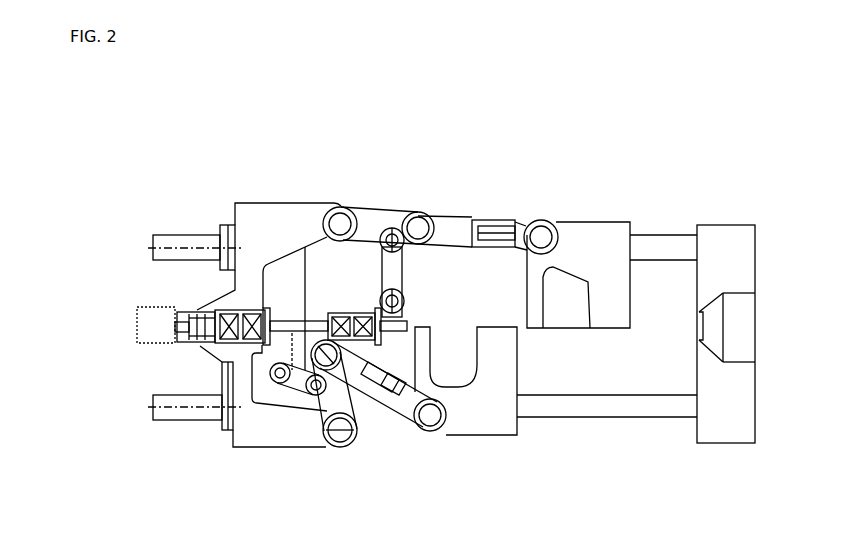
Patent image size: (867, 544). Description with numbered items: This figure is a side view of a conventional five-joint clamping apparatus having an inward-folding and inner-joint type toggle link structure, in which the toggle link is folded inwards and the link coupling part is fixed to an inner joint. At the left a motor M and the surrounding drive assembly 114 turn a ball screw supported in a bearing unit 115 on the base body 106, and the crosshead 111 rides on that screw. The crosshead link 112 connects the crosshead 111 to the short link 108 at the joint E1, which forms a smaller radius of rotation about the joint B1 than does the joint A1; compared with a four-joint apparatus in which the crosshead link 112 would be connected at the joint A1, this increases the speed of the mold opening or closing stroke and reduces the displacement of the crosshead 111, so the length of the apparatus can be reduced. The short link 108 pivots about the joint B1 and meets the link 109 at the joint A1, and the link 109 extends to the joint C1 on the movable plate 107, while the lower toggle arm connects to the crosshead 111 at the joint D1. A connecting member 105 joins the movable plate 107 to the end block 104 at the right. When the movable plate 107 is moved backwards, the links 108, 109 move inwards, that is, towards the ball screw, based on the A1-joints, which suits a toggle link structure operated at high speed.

The drive block 104 is at (738, 256).
The connecting rod 105 is at (663, 243).
The base body 106 is at (270, 218).
The movable plate 107 is at (603, 233).
The short link 108 is at (372, 226).
The link 109 is at (460, 217).
The crosshead 111 is at (425, 334).
The crosshead link 112 is at (396, 268).
The motor 114 is at (155, 340).
The bearing unit 115 is at (235, 350).
The motor M is at (155, 327).
The joint A1 is at (419, 220).
The joint B1 is at (330, 206).
The pivot C1 is at (541, 228).
The pivot D1 is at (405, 304).
The joint E1 is at (404, 243).